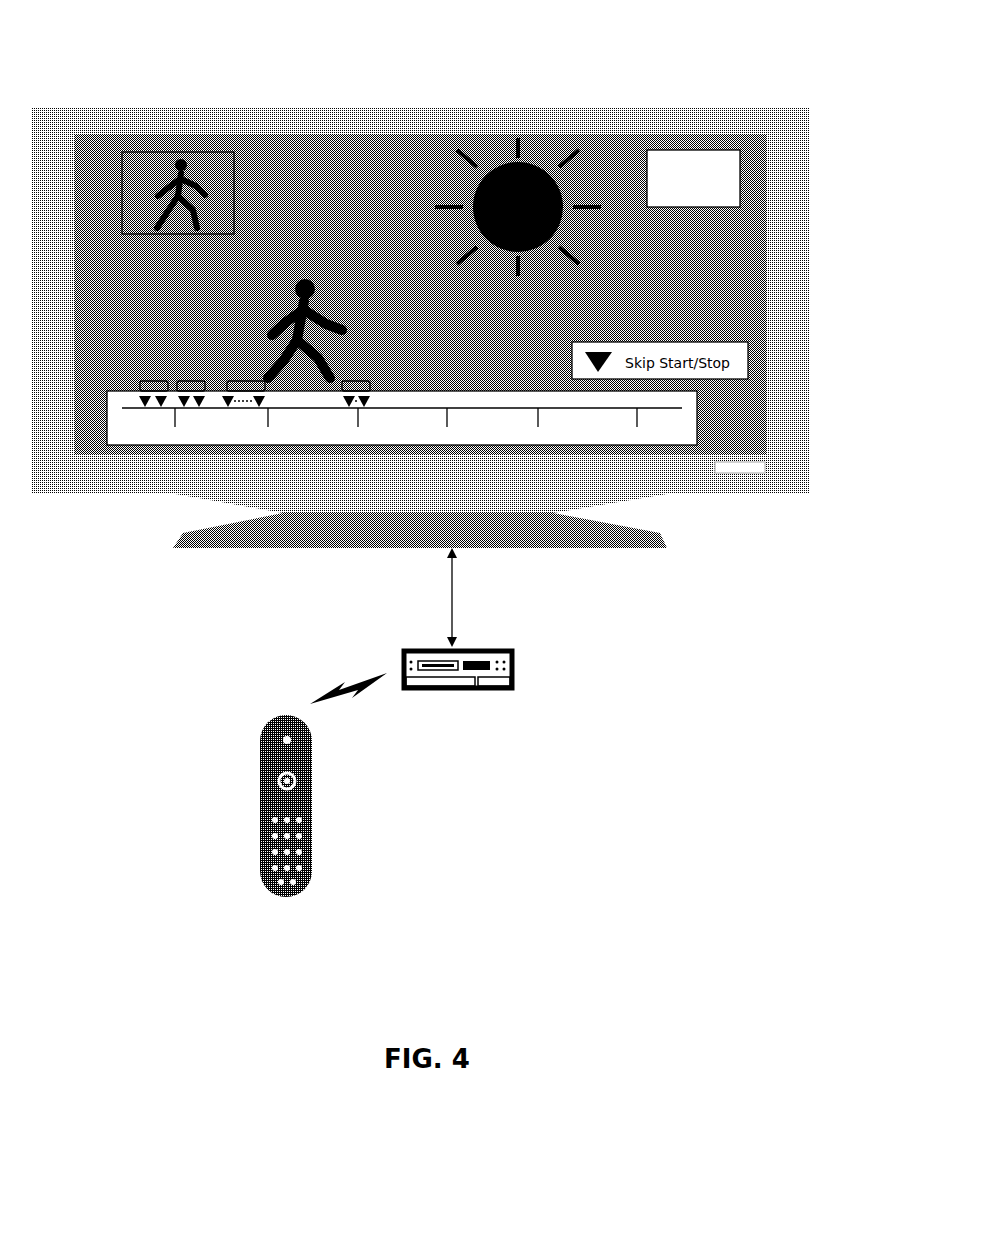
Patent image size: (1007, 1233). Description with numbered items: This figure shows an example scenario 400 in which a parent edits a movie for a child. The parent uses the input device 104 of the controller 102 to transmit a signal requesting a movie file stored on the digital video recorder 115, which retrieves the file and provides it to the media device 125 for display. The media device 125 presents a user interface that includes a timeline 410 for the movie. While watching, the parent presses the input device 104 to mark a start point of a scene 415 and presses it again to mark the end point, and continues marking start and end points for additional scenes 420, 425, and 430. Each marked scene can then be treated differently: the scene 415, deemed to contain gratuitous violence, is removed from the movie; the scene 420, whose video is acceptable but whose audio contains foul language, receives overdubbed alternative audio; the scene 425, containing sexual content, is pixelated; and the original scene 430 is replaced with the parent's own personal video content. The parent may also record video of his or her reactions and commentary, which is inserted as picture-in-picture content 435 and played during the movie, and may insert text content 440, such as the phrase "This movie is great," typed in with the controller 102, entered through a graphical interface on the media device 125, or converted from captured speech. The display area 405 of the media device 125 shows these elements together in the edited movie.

The media device 125 is at (86, 108).
The display screen area 405 is at (177, 130).
The picture-in-picture content 435 is at (228, 152).
The text content 440 is at (683, 150).
The timeline 410 is at (118, 445).
The scene 415 is at (155, 381).
The scene 420 is at (192, 381).
The scene 425 is at (245, 381).
The scene 430 is at (357, 381).
The digital video recorder 115 is at (455, 690).
The input device 104 is at (312, 798).
The controller 102 is at (263, 867).
The content skipping system 400 is at (425, 870).